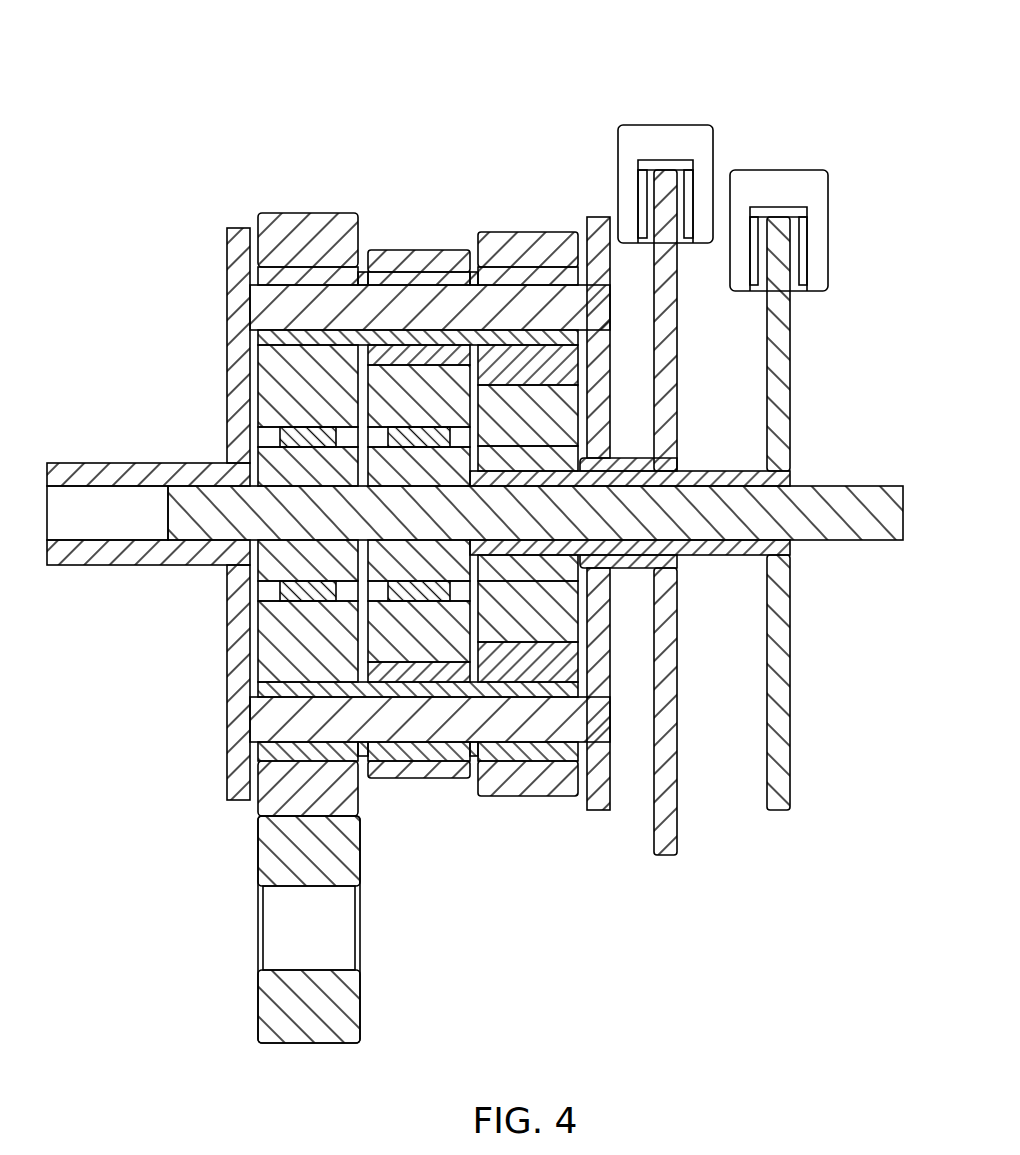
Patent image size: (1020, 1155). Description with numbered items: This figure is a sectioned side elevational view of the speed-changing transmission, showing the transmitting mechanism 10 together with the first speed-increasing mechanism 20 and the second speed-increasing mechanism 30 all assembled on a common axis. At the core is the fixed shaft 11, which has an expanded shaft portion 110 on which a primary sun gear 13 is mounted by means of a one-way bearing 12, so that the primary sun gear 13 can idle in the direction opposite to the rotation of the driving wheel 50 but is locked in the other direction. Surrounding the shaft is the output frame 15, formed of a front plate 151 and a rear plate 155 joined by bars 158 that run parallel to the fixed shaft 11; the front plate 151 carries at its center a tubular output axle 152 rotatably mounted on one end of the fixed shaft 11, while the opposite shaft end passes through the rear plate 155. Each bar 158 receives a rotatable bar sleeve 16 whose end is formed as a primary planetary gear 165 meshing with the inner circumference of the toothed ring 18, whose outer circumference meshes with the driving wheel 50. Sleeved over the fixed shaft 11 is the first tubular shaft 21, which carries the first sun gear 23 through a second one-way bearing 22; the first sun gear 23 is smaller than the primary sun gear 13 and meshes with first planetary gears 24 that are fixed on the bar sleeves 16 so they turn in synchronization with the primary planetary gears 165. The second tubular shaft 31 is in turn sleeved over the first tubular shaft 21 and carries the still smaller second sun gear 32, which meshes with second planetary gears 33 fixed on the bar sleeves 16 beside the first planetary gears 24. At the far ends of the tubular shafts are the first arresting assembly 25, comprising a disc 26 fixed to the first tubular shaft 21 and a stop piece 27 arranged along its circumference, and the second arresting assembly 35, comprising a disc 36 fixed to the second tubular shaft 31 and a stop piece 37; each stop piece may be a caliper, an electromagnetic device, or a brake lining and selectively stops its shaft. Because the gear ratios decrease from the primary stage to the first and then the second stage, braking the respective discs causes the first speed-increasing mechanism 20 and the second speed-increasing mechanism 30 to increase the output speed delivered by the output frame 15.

The transmitting mechanism 10 is at (302, 123).
The fixed shaft 11 is at (188, 497).
The expanded shaft portion 110 is at (262, 470).
The one-way bearing 12 is at (300, 432).
The primary sun gear 13 is at (283, 358).
The output frame 15 is at (221, 216).
The front plate 151 is at (230, 637).
The tubular output axle 152 is at (92, 478).
The rear plate 155 is at (594, 216).
The bar 158 is at (373, 308).
The bar sleeve 16 is at (400, 278).
The primary planetary gear 165 is at (323, 272).
The toothed ring 18 is at (290, 220).
The first speed-increasing mechanism 20 is at (425, 210).
The first tubular shaft 21 is at (718, 478).
The one-way bearing 22 is at (422, 593).
The first sun gear 23 is at (398, 642).
The first planetary gear 24 is at (440, 252).
The first arresting assembly 25 is at (767, 138).
The disc 26 is at (780, 330).
The stop piece 27 is at (790, 178).
The second speed-increasing mechanism 30 is at (510, 194).
The second tubular shaft 31 is at (627, 468).
The second sun gear 32 is at (570, 622).
The second planetary gear 33 is at (540, 240).
The second arresting assembly 35 is at (672, 103).
The disc 36 is at (668, 355).
The stop piece 37 is at (638, 133).
The driving wheel 50 is at (275, 1005).